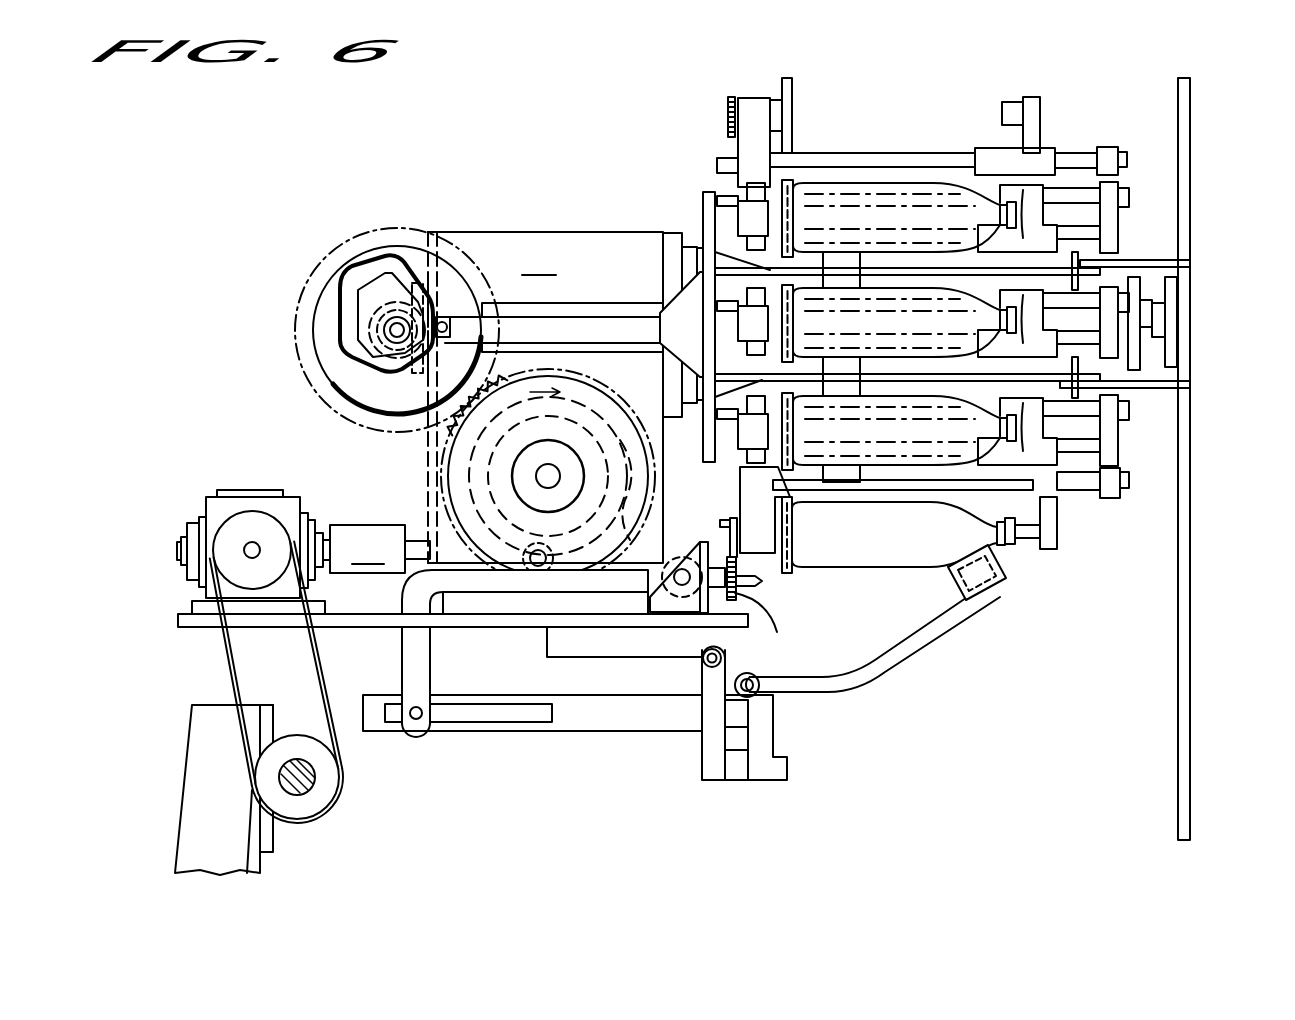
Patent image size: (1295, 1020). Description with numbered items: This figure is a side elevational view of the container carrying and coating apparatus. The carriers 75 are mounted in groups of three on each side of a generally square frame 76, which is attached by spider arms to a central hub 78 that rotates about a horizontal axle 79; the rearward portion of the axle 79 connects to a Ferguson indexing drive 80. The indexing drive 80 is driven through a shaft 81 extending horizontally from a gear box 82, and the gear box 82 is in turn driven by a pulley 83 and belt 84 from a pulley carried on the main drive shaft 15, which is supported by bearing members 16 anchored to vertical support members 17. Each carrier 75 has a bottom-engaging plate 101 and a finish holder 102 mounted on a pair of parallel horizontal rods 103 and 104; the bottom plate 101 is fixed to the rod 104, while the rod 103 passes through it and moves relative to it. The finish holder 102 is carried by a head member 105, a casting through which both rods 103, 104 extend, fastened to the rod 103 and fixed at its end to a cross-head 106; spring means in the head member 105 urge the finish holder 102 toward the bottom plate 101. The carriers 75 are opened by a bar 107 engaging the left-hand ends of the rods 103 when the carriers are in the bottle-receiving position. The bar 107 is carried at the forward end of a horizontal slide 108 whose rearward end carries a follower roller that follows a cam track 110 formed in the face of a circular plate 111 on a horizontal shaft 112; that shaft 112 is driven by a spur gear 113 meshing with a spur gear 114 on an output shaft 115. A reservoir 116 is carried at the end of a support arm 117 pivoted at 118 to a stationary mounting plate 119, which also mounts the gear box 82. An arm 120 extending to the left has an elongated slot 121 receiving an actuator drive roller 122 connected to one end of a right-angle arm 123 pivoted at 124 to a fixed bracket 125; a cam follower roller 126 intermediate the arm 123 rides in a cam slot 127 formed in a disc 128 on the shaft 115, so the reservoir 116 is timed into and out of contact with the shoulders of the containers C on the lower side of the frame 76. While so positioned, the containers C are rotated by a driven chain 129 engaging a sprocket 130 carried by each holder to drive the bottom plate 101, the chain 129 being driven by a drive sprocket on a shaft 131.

The horizontal shaft 15 is at (303, 783).
The bearing members 16 is at (267, 823).
The vertical support members 17 is at (200, 762).
The carriers 75 is at (1140, 222).
The square frame 76 is at (842, 382).
The central hub 78 is at (1133, 273).
The horizontal axle 79 is at (1160, 323).
The Ferguson indexing drive 80 is at (545, 397).
The shaft 81 is at (380, 549).
The gear box 82 is at (222, 504).
The pulley 83 is at (243, 548).
The belt 84 is at (232, 652).
The bottom-engaging plate 101 is at (803, 40).
The finish holder 102 is at (1004, 100).
The rod 103 is at (722, 197).
The rod 104 is at (443, 322).
The head member 105 is at (1036, 113).
The cross-head 106 is at (1110, 236).
The bar 107 is at (706, 200).
The horizontal slide 108 is at (575, 325).
The cam track 110 is at (345, 289).
The circular plate 111 is at (325, 315).
The horizontal shaft 112 is at (396, 331).
The spur gear 113 is at (316, 388).
The spur gear 114 is at (448, 432).
The output shaft 115 is at (540, 478).
The reservoir 116 is at (983, 576).
The support arm 117 is at (886, 672).
The pivot 118 is at (704, 661).
The mounting plate 119 is at (579, 640).
The arm 120 is at (612, 724).
The elongated slot 121 is at (504, 724).
The actuator drive roller 122 is at (416, 722).
The arm 123 is at (402, 652).
The pivot 124 is at (686, 566).
The fixed bracket 125 is at (710, 586).
The cam follower roller 126 is at (536, 566).
The cam slot 127 is at (612, 440).
The disc 128 is at (512, 492).
The driven chain 129 is at (779, 620).
The sprocket 130 is at (727, 100).
The shaft 131 is at (762, 583).
The containers C is at (893, 190).